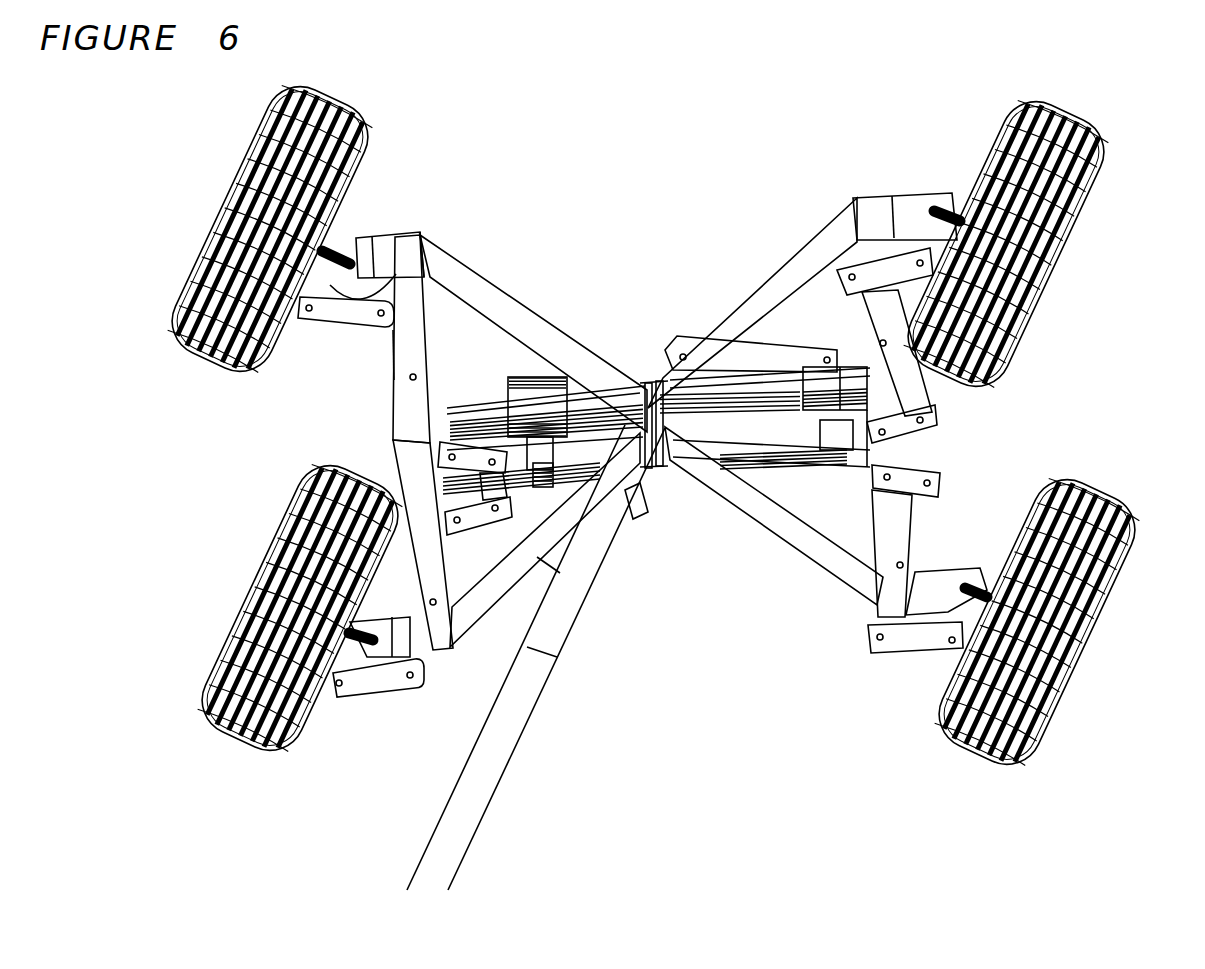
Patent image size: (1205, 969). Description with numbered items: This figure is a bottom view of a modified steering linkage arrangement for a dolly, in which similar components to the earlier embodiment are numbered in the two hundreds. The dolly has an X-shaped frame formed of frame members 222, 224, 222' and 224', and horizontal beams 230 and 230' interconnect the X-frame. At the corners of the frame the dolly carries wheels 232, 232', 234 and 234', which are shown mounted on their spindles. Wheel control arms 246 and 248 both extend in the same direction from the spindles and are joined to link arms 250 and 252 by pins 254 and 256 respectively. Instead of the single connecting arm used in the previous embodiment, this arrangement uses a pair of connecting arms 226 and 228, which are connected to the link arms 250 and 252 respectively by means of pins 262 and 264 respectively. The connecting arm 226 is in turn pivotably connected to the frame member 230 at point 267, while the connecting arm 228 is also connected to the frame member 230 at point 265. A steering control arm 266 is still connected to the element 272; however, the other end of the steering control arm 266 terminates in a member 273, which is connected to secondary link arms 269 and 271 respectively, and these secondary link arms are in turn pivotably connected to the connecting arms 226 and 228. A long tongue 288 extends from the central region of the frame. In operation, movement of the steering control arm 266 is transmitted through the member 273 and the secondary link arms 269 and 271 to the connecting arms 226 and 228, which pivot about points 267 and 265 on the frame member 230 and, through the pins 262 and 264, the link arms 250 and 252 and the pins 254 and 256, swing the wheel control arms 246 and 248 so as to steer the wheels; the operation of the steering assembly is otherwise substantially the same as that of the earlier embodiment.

The frame member 222 is at (533, 333).
The frame member 222' is at (752, 303).
The frame member 224 is at (559, 540).
The frame member 224' is at (774, 516).
The connecting arm 226 is at (440, 558).
The connecting arm 228 is at (394, 354).
The horizontal beam 230 is at (439, 339).
The horizontal beam 230' is at (873, 453).
The rear wheel 232 is at (267, 620).
The rear wheel 232' is at (1063, 622).
The front wheel 234 is at (296, 227).
The front wheel 234' is at (1044, 244).
The wheel control arm 246 is at (365, 688).
The wheel control arm 248 is at (365, 276).
The link arm 250 is at (379, 686).
The link arm 252 is at (422, 232).
The pin 254 is at (340, 687).
The pin 256 is at (309, 311).
The pin 262 is at (416, 681).
The pin 264 is at (395, 290).
The point 265 is at (412, 381).
The steering control arm 266 is at (632, 517).
The point 267 is at (438, 603).
The secondary link arm 269 is at (477, 518).
The secondary link arm 271 is at (470, 454).
The element 272 is at (560, 448).
The member 273 is at (506, 490).
The tongue 288 is at (503, 742).